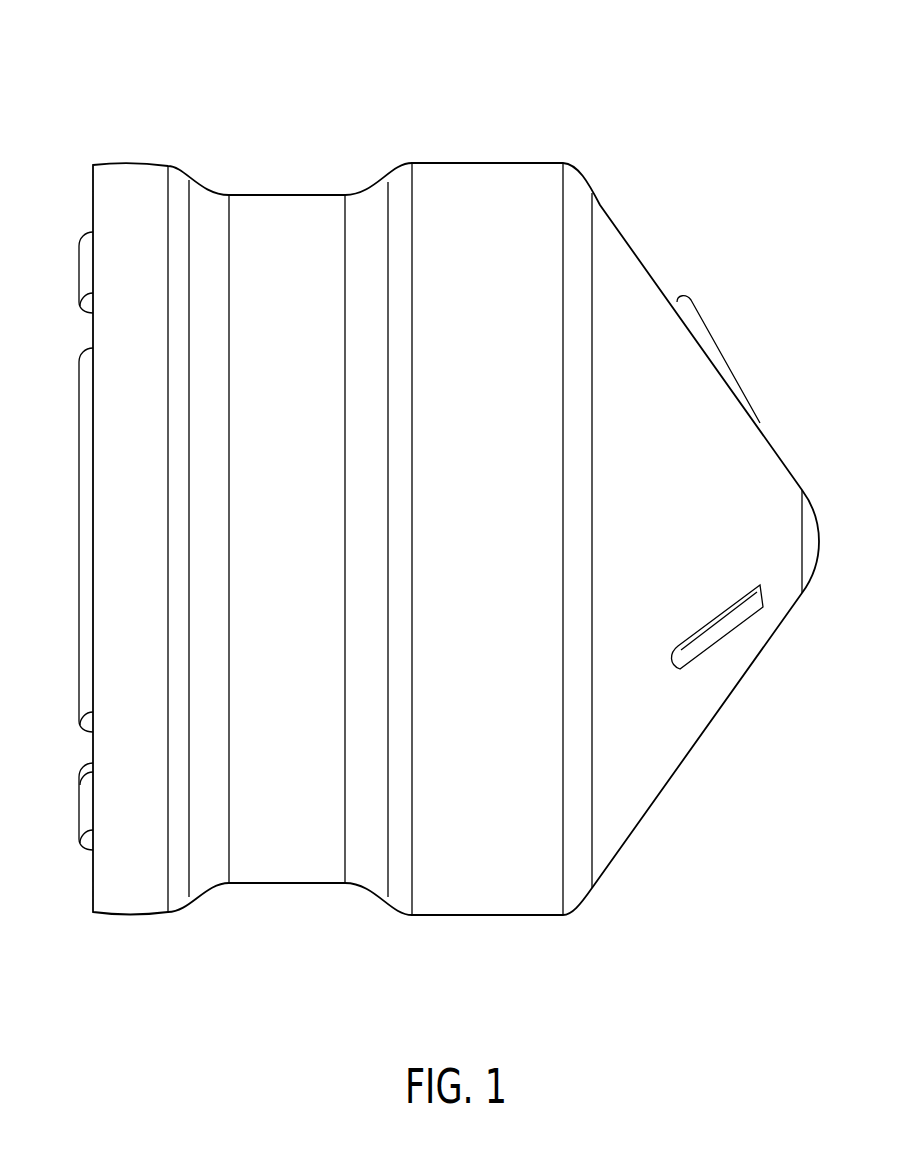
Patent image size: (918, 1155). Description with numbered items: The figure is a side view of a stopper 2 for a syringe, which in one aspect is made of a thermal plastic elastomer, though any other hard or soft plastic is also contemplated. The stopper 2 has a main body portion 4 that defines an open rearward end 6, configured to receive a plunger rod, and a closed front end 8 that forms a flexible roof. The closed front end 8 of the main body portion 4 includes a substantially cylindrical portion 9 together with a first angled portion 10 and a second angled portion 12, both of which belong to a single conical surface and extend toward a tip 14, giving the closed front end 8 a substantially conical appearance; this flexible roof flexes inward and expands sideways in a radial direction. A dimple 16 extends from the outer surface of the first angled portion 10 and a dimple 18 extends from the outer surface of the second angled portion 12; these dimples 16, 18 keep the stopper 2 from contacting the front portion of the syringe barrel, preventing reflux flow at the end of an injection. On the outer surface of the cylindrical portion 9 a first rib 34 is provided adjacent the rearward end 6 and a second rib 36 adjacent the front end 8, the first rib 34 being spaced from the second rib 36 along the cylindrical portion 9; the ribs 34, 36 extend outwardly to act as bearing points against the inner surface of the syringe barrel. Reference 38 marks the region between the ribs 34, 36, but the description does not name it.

The stopper 2 is at (655, 95).
The main body portion 4 is at (287, 852).
The open rearward end 6 is at (93, 540).
The closed front end 8 is at (790, 463).
The cylindrical portion 9 is at (482, 908).
The first angled portion 10 is at (628, 240).
The second angled portion 12 is at (655, 805).
The tip 14 is at (819, 542).
The dimple 16 is at (728, 353).
The dimple 18 is at (723, 637).
The first rib 34 is at (133, 160).
The second rib 36 is at (487, 158).
The groove 38 is at (287, 192).